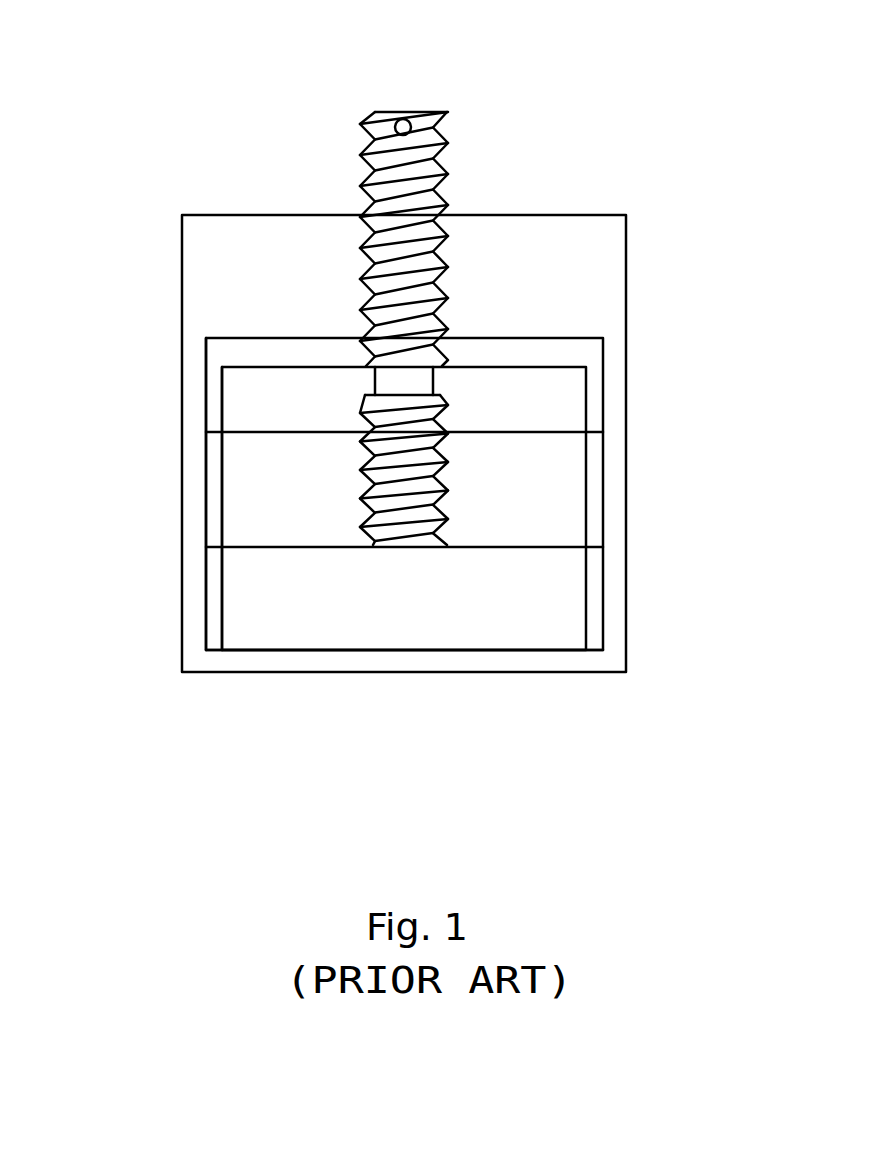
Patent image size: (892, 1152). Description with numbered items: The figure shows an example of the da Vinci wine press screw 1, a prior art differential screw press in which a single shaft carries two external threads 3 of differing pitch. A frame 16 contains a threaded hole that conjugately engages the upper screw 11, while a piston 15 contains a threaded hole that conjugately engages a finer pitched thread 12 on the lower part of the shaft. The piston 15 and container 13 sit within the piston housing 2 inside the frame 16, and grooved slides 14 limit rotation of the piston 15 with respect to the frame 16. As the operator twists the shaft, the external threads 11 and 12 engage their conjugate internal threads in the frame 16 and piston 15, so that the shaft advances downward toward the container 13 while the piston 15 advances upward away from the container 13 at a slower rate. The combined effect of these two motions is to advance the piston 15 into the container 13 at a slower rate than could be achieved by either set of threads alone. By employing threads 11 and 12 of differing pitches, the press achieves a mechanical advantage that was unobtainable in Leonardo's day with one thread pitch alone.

The screw 1 is at (401, 277).
The nut housing 2 is at (397, 561).
The thread 3 is at (370, 173).
The upper screw 11 is at (443, 167).
The finer pitched thread 12 is at (448, 458).
The container 13 is at (238, 652).
The grooved slides 14 is at (206, 612).
The piston 15 is at (267, 547).
The frame 16 is at (593, 250).